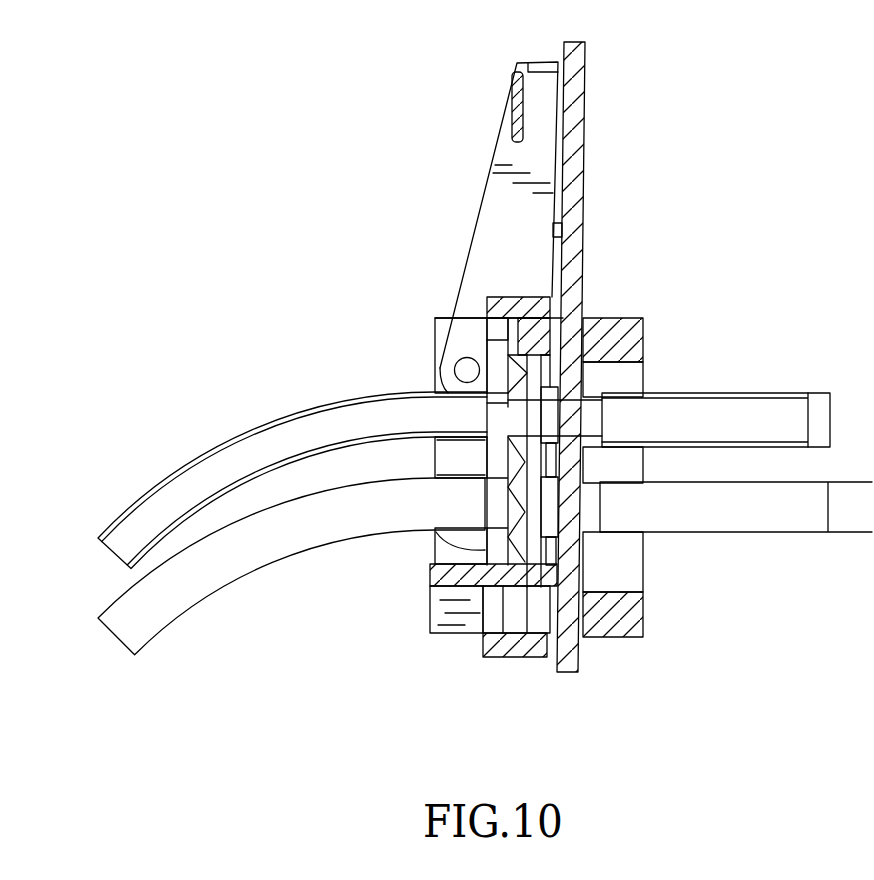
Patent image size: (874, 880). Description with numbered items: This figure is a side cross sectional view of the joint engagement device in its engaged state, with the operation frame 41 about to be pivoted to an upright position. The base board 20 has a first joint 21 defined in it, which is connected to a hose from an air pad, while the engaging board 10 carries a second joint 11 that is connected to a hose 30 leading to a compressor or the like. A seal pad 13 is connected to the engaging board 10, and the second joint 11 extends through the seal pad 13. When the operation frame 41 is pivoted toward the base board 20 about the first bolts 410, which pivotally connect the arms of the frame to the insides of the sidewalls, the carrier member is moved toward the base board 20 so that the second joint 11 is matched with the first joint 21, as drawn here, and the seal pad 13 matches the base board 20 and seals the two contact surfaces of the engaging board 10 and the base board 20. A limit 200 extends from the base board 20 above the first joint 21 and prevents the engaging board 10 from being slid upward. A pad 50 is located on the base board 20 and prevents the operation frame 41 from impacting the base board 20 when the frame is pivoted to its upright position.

The engaging board 10 is at (513, 500).
The second joints 11 is at (470, 440).
The seal pad 13 is at (530, 527).
The base board 20 is at (578, 122).
The first joints 21 is at (552, 387).
The hose 30 is at (326, 415).
The operation frame 41 is at (515, 66).
The pads 50 is at (563, 231).
The limits 200 is at (522, 297).
The first bolts 410 is at (455, 370).